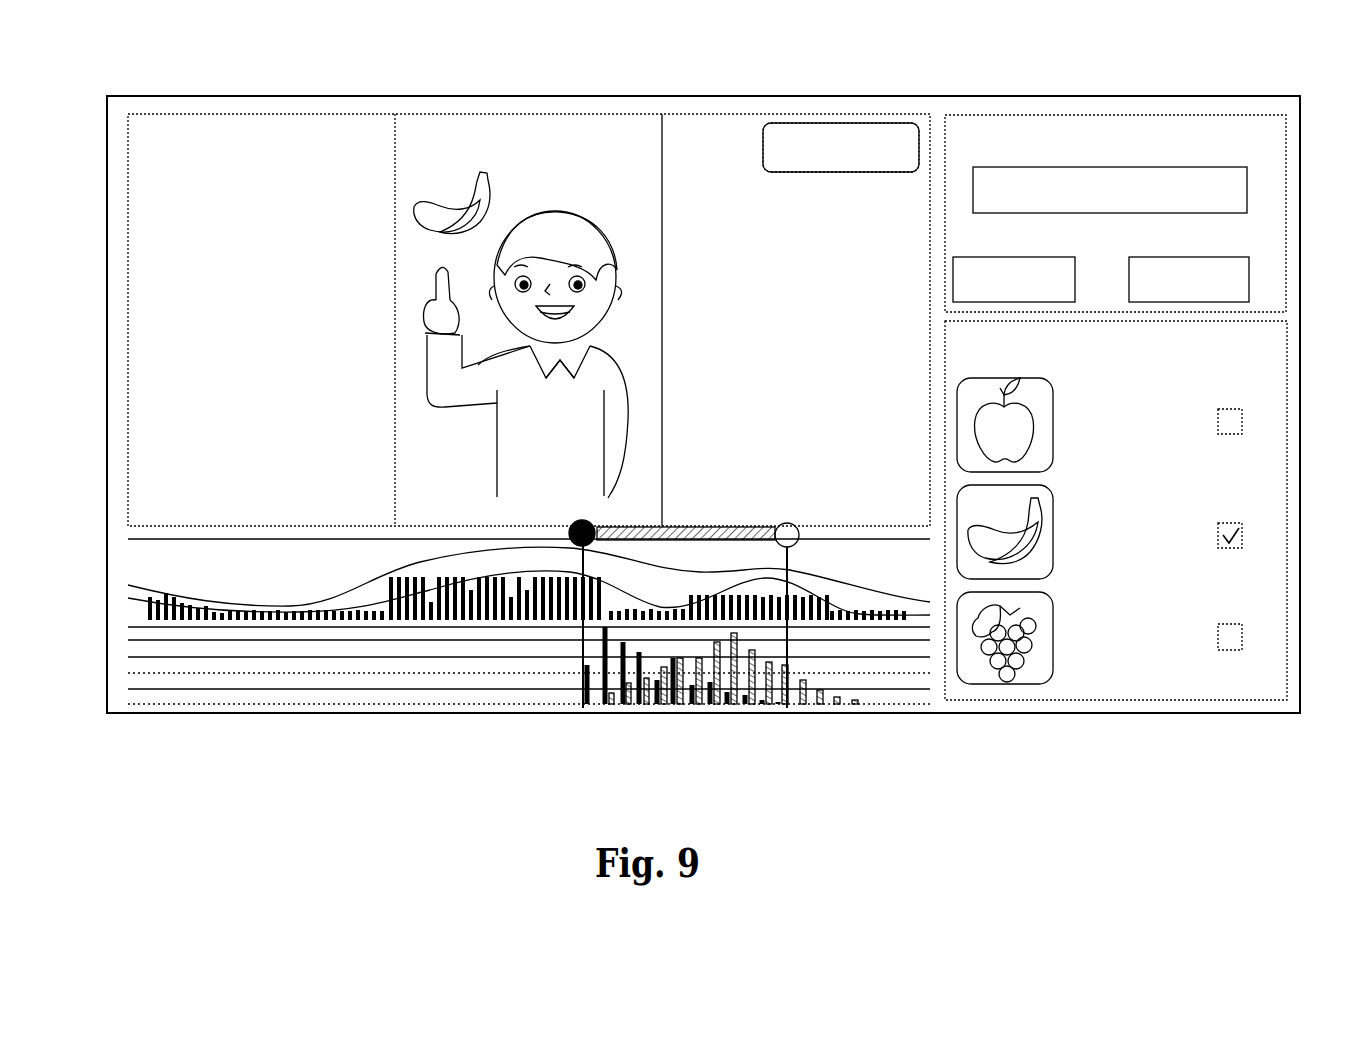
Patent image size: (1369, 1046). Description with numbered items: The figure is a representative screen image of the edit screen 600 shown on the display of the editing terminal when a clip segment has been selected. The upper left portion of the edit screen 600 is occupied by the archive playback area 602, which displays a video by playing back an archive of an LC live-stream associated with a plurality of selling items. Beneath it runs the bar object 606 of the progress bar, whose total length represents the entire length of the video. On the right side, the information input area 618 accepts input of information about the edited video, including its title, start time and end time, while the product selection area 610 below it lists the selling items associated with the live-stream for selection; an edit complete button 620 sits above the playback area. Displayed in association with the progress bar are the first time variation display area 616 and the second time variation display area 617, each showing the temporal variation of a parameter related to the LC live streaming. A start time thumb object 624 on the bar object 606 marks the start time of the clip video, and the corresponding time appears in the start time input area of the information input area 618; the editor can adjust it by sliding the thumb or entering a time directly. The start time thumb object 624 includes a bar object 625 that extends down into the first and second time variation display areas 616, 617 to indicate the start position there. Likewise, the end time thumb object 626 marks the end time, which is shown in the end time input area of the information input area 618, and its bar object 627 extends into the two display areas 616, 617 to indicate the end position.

The edit screen 600 is at (985, 713).
The archive playback area 602 is at (633, 118).
The bar object 606 is at (864, 524).
The product selection area 610 is at (1273, 362).
The first time variation display area 616 is at (133, 568).
The second time variation display area 617 is at (133, 648).
The information input area 618 is at (1273, 150).
The edit complete button 620 is at (913, 130).
The start time thumb object 624 is at (590, 522).
The bar object 625 is at (581, 655).
The end time thumb object 626 is at (787, 522).
The bar object 627 is at (785, 650).